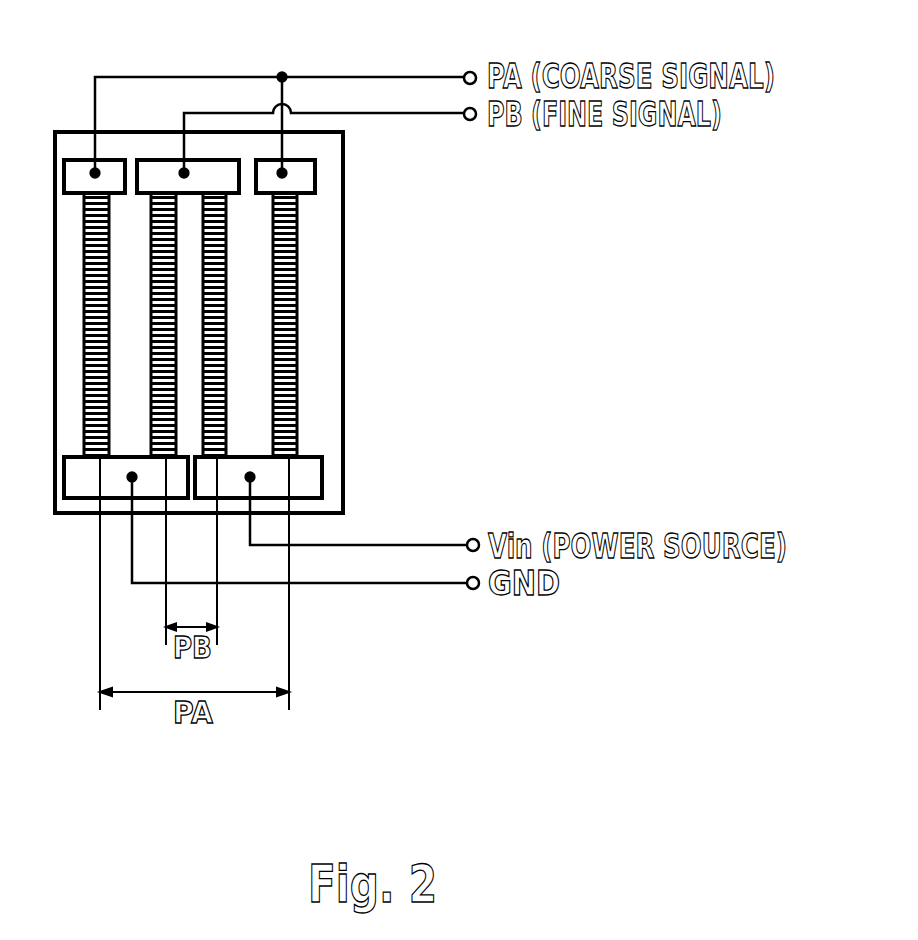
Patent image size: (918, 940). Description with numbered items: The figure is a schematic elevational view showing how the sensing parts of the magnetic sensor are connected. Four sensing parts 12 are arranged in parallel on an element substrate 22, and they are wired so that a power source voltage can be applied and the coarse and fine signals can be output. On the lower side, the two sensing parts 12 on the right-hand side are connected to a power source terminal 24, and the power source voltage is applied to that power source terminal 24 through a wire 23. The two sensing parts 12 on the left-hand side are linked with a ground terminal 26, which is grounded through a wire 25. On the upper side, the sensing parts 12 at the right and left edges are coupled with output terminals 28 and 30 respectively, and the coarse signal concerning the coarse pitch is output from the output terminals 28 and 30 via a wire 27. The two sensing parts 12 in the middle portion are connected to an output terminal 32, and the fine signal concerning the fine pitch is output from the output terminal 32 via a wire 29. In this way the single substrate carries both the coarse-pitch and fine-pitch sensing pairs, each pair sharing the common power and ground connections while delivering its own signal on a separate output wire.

The sensing part 12 is at (300, 372).
The element substrate 22 is at (343, 277).
The wire 23 is at (408, 545).
The power source terminal 24 is at (322, 492).
The wire 25 is at (388, 583).
The GND terminal 26 is at (73, 498).
The wire 27 is at (400, 77).
The output terminal 28 is at (315, 170).
The wire 29 is at (422, 114).
The output terminal 30 is at (83, 160).
The output terminal 32 is at (163, 160).